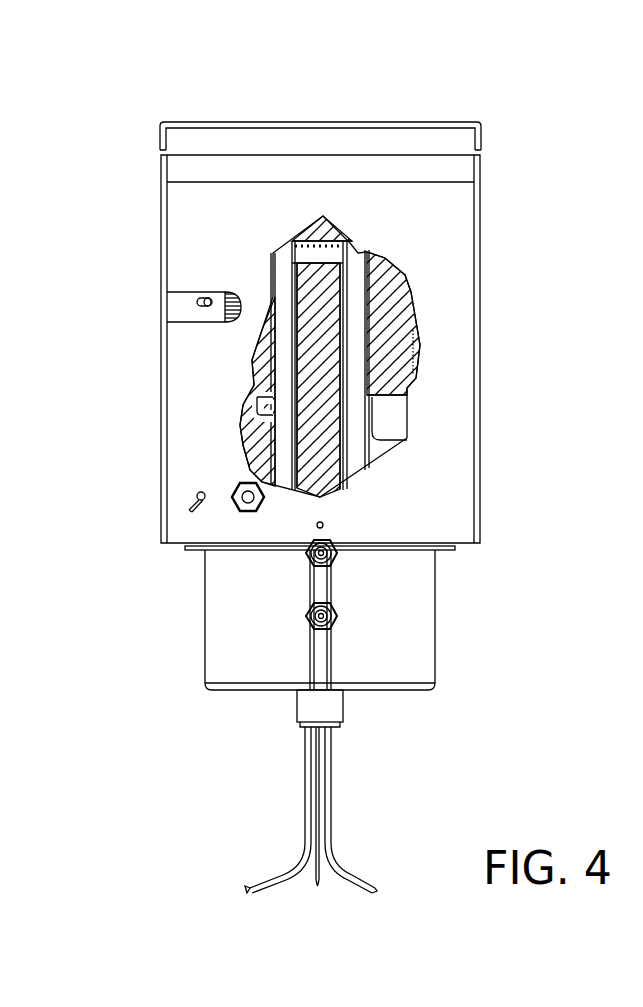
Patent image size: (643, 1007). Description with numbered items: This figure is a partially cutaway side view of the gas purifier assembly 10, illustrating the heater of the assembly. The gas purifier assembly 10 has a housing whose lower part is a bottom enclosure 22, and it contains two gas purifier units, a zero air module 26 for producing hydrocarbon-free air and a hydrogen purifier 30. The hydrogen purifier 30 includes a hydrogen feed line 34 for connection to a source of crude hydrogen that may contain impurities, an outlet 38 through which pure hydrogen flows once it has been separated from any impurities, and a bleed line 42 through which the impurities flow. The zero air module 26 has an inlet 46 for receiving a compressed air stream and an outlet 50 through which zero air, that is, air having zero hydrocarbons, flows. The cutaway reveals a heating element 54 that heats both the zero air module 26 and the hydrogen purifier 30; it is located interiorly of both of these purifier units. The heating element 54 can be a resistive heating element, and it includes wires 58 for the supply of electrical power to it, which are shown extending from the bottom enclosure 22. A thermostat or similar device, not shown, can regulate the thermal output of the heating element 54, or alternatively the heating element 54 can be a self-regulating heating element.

The gas purifier assembly 10 is at (147, 136).
The bottom enclosure 22 is at (439, 663).
The zero air module 26 is at (355, 456).
The hydrogen purifier 30 is at (385, 322).
The hydrogen feed line 34 is at (207, 305).
The outlet 38 is at (235, 500).
The bleed line 42 is at (196, 512).
The inlet 46 is at (336, 620).
The outlet 50 is at (333, 557).
The heating element 54 is at (323, 302).
The wires 58 is at (344, 781).